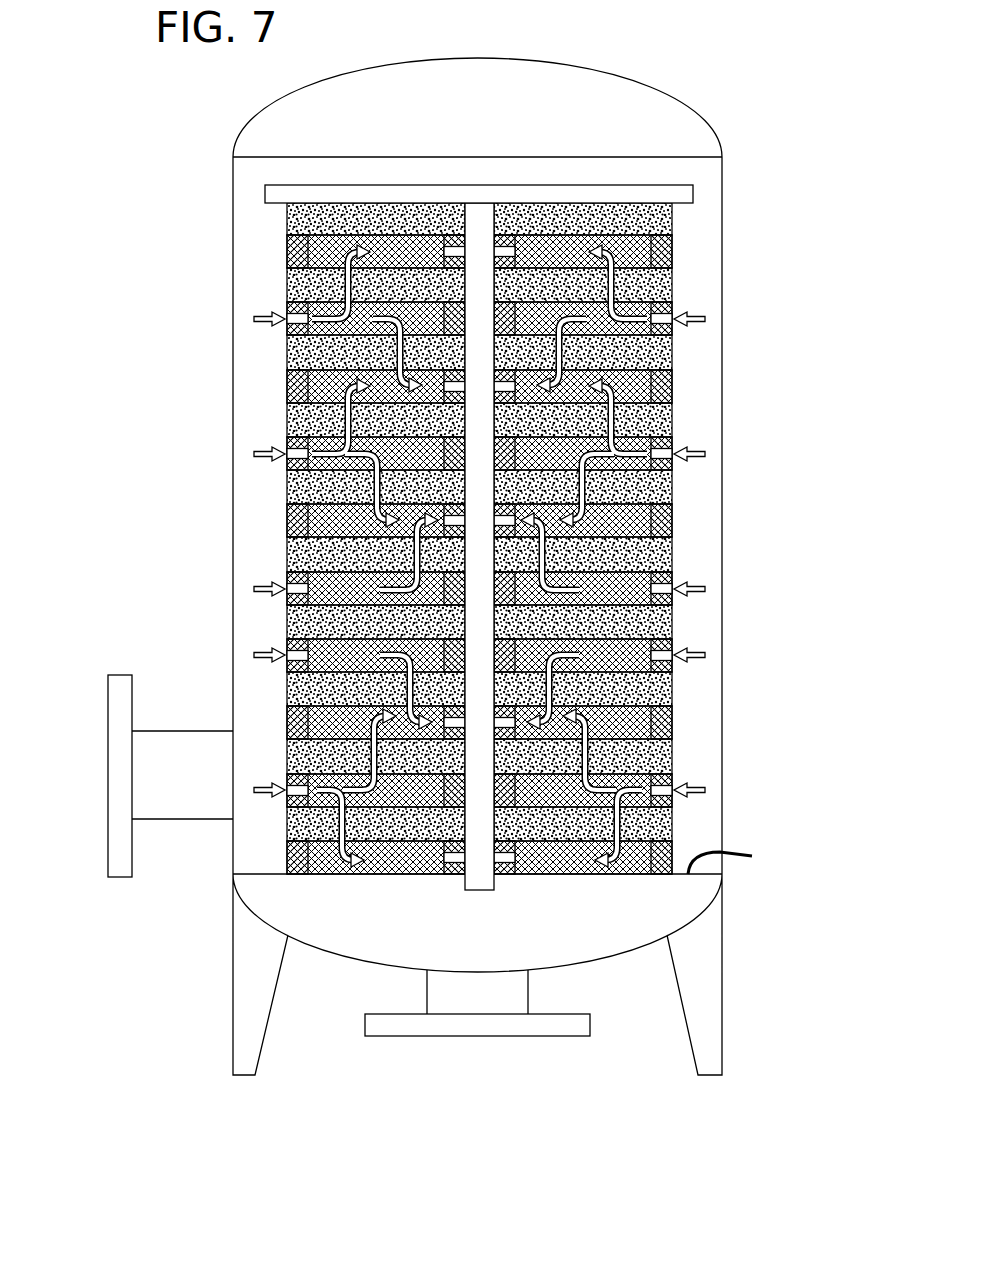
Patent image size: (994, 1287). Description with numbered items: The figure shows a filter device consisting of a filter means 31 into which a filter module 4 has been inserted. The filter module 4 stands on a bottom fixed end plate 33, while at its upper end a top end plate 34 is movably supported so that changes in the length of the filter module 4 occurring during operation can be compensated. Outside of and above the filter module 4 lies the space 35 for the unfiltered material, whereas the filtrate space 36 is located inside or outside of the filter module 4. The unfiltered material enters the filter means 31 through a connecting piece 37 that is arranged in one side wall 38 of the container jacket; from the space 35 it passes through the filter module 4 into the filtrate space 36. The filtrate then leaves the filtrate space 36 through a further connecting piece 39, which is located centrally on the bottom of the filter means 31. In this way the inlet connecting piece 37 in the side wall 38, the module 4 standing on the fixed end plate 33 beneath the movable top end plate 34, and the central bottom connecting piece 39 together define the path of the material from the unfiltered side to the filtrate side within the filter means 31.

The filter means 31 is at (742, 230).
The bottom fixed end plate 33 is at (737, 859).
The top end plate 34 is at (603, 185).
The space for the unfiltered material 35 is at (262, 402).
The filtrate space 36 is at (478, 491).
The connecting piece 37 is at (108, 760).
The side wall 38 is at (233, 567).
The connecting piece 39 is at (490, 1036).
The filter module 4 is at (655, 578).